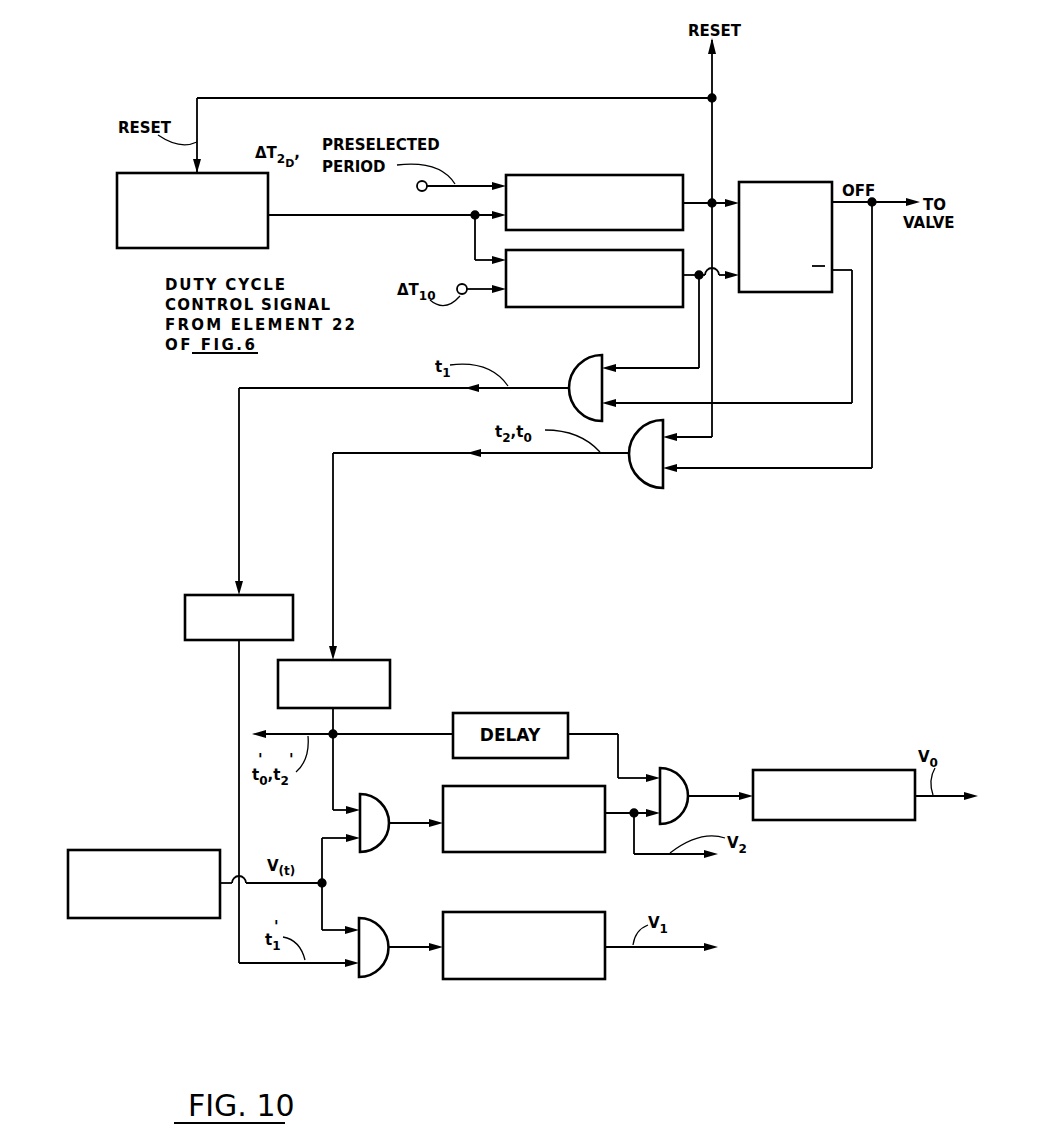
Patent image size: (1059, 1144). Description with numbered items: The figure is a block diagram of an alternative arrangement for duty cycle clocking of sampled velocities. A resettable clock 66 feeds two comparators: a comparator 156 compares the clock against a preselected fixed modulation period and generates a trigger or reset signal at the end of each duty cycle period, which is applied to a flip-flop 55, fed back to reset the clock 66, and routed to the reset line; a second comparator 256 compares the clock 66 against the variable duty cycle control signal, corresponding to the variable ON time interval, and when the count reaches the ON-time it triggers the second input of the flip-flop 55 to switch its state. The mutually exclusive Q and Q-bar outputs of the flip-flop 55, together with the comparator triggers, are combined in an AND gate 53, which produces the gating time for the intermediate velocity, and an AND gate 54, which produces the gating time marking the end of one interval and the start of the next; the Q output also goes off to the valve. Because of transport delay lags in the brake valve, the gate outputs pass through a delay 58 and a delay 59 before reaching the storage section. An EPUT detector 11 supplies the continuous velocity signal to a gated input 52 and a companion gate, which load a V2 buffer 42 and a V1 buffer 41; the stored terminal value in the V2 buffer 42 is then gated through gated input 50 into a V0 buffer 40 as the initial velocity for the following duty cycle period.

The resettable clock 66 is at (240, 235).
The comparator 156 is at (576, 190).
The second comparator 256 is at (595, 290).
The flip-flop 55 is at (793, 205).
The AND gate 53 is at (590, 383).
The AND gate 54 is at (653, 462).
The delay element 58 is at (205, 600).
The delay element 59 is at (375, 675).
The EPUT device 11 is at (190, 905).
The gated input 52 is at (372, 822).
The gated buffer storage element 42 is at (538, 800).
The gated input 50 is at (672, 798).
The gated buffer storage element 40 is at (857, 785).
The gated buffer storage element 41 is at (553, 930).